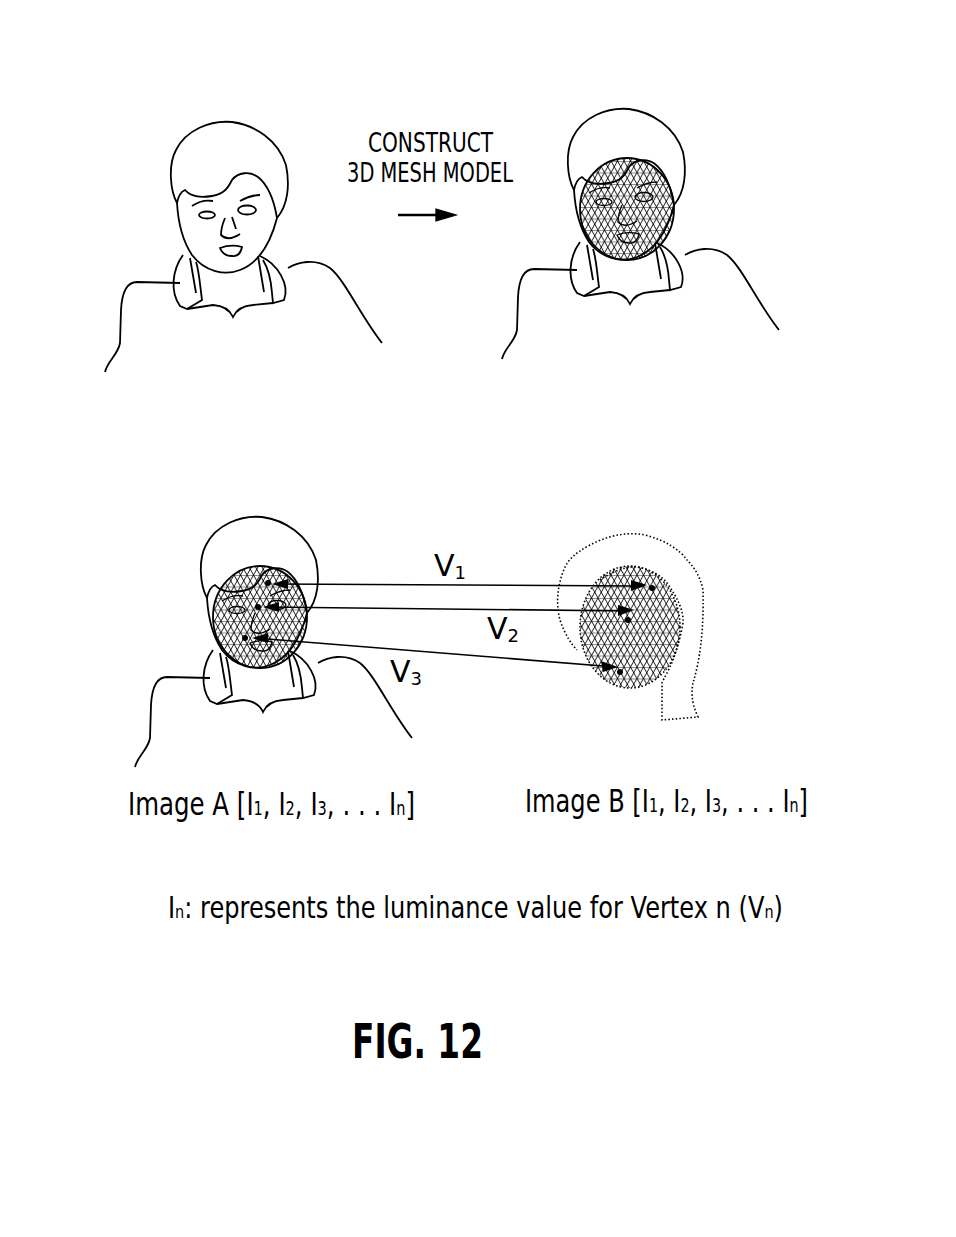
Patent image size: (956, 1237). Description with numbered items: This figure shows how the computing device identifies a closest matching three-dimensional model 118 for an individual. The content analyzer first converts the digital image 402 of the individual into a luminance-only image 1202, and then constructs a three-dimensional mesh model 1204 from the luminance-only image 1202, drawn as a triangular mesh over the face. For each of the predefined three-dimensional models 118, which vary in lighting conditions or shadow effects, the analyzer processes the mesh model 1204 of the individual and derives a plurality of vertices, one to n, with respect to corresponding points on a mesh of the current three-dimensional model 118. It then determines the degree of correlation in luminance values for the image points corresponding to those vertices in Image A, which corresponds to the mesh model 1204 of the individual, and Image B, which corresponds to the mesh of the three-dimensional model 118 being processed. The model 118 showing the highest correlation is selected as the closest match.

The digital image 402 is at (115, 145).
The luminance-only image 1202 is at (751, 87).
The 3D mesh model 1204 is at (677, 213).
The 3D model 118 is at (737, 536).